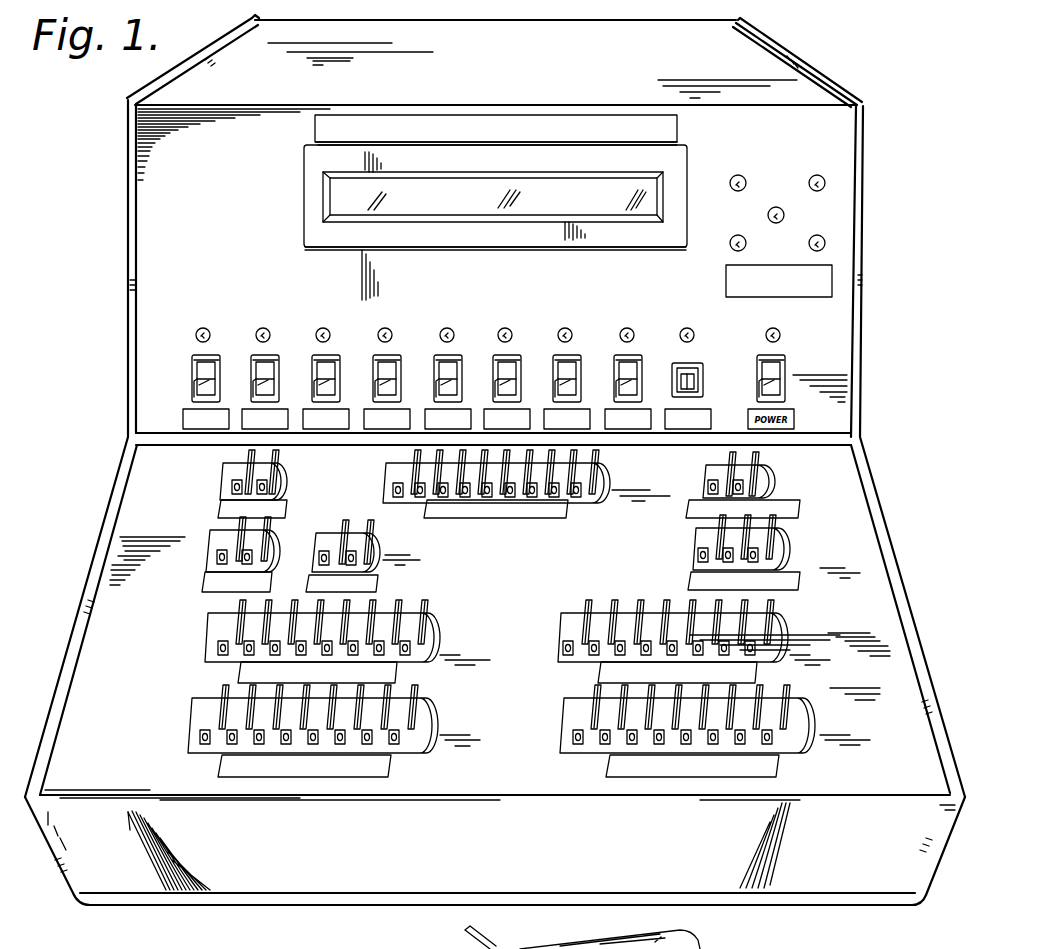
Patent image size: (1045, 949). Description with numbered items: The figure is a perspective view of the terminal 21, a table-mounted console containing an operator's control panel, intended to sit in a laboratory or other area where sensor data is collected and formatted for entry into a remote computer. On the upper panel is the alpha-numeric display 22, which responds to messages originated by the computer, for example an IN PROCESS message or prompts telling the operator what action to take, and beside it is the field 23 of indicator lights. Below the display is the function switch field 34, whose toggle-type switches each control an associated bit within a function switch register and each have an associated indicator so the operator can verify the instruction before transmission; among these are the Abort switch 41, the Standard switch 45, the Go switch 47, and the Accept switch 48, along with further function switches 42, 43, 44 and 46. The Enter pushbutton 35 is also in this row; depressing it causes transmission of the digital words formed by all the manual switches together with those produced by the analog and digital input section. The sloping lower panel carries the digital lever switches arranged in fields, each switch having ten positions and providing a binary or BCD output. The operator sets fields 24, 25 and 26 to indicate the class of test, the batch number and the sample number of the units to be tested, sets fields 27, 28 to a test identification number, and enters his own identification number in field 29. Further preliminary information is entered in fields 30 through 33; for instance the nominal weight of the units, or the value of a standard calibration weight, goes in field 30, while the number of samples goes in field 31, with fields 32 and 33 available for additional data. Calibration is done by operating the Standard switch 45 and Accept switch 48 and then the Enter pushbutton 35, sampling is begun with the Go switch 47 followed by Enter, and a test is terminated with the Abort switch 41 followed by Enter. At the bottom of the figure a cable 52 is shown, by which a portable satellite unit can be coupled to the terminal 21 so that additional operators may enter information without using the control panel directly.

The terminal 21 is at (205, 910).
The display 22 is at (673, 180).
The field 23 is at (818, 213).
The field 24 is at (280, 490).
The field 25 is at (607, 484).
The field 26 is at (768, 488).
The field 27 is at (212, 540).
The field 28 is at (383, 551).
The field 29 is at (786, 550).
The field 30 is at (440, 622).
The field 31 is at (190, 736).
The field 32 is at (782, 641).
The field 33 is at (565, 743).
The function switch field 34 is at (576, 298).
The Enter pushbutton 35 is at (695, 362).
The Abort switch 41 is at (208, 353).
The spare switch 42 is at (266, 353).
The sample switch 43 is at (328, 353).
The blank switch 44 is at (390, 353).
The Standard switch 45 is at (452, 353).
The rerun switch 46 is at (512, 353).
The Go switch 47 is at (570, 353).
The Accept switch 48 is at (632, 353).
The cable 52 is at (465, 935).